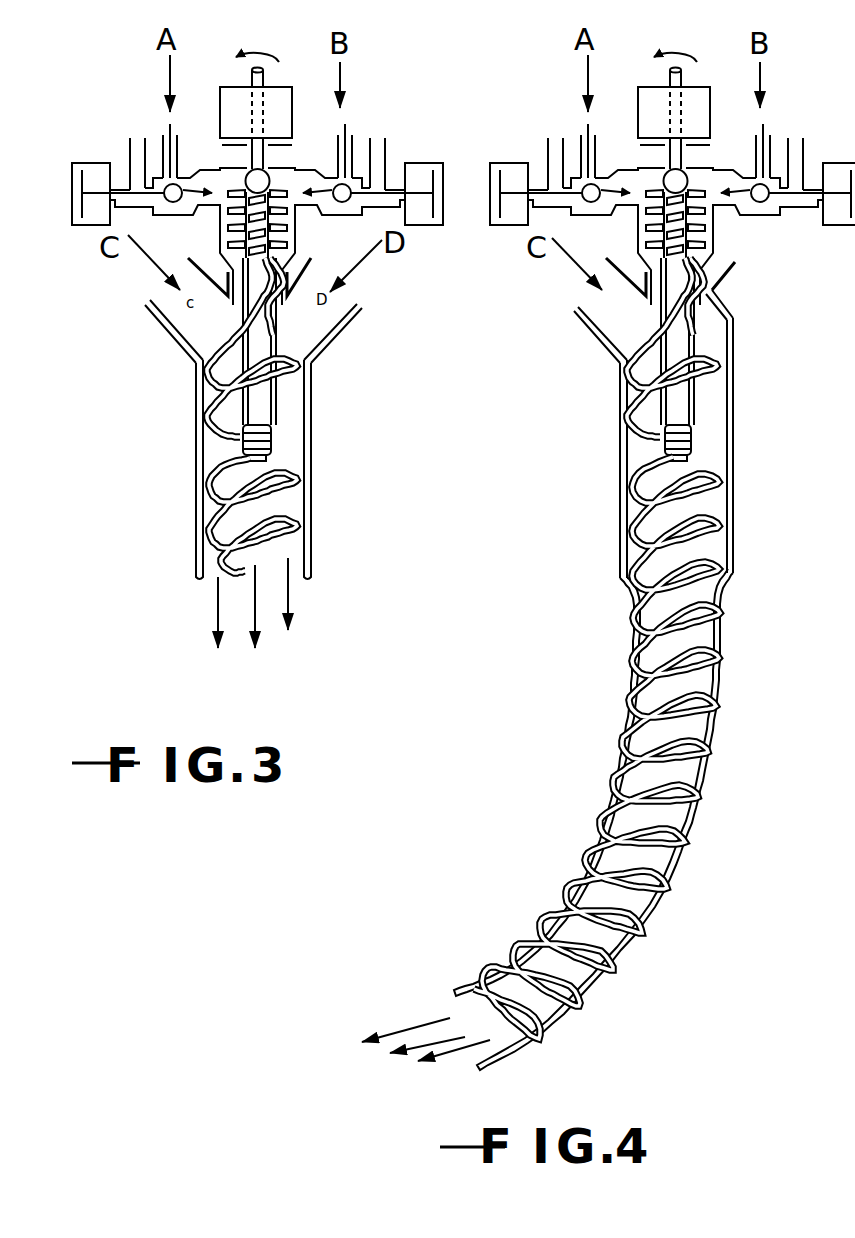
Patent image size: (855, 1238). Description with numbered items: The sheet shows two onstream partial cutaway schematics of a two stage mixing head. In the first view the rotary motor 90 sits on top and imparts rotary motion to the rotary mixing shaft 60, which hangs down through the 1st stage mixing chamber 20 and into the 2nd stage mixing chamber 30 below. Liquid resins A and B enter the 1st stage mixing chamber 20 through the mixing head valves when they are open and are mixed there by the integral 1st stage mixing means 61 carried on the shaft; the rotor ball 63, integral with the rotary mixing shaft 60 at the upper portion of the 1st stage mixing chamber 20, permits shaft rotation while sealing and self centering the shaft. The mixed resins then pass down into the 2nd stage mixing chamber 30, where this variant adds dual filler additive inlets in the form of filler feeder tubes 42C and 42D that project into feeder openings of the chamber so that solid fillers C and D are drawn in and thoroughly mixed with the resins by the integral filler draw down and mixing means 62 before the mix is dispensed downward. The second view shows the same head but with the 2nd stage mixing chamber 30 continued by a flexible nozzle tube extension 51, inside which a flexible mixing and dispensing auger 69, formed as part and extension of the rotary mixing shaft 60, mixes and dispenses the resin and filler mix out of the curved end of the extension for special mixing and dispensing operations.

In FIG. 3, the 1st stage mixing chamber 20 is at (232, 173).
In FIG. 4, the 1st stage mixing chamber 20 is at (650, 173).
In FIG. 3, the 2nd stage mixing chamber 30 is at (285, 448).
In FIG. 4, the 2nd stage mixing chamber 30 is at (705, 450).
In FIG. 3, the filler feeder tube 42C is at (158, 295).
In FIG. 4, the filler feeder tube 42C is at (578, 303).
In FIG. 3, the filler feeder tube 42D is at (352, 296).
In FIG. 4, the flexible nozzle tube extension 51 is at (660, 845).
In FIG. 3, the rotary mixing shaft 60 is at (262, 346).
In FIG. 4, the rotary mixing shaft 60 is at (683, 346).
In FIG. 3, the 1st stage mixing means 61 is at (290, 231).
In FIG. 4, the 1st stage mixing means 61 is at (702, 235).
In FIG. 3, the filler draw down and mixing means 62 is at (285, 503).
In FIG. 3, the rotor ball 63 is at (262, 183).
In FIG. 4, the rotor ball 63 is at (680, 183).
In FIG. 4, the flexible mixing and dispensing auger 69 is at (605, 830).
In FIG. 3, the rotary motor 90 is at (275, 107).
In FIG. 4, the rotary motor 90 is at (693, 107).